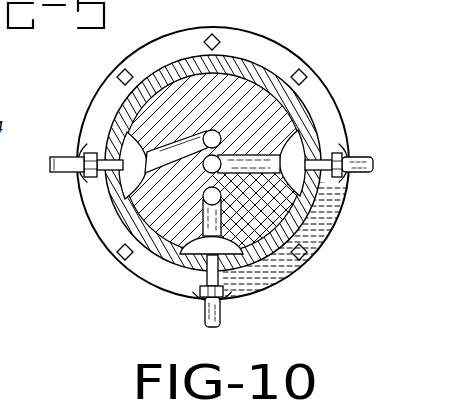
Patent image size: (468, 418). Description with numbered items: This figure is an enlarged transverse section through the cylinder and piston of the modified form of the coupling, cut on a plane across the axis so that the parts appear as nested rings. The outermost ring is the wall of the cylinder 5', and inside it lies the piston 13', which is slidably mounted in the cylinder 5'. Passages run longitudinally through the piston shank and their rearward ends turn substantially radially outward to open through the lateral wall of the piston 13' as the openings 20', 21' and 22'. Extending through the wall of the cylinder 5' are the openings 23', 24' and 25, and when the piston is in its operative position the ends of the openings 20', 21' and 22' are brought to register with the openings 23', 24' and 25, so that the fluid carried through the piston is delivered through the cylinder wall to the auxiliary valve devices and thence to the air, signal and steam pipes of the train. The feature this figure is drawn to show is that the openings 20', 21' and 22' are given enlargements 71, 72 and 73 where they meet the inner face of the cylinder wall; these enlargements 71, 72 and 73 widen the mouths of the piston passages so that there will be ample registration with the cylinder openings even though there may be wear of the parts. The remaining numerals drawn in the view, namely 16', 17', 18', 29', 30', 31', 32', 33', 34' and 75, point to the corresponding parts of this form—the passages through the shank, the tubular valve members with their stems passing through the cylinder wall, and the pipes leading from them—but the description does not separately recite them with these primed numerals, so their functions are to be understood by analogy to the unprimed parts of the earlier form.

The cylinder 5' is at (213, 139).
The piston 13' is at (256, 157).
The valve pivot 16' is at (184, 78).
The passage sector 17' is at (238, 178).
The casing wall 18' is at (213, 177).
The opening 20' is at (297, 236).
The opening 21' is at (135, 120).
The opening 22' is at (208, 180).
The opening 23' is at (351, 189).
The opening 24' is at (71, 192).
The passage 25 is at (207, 321).
The right nut 29' is at (360, 156).
The left adjusting rod 30' is at (73, 156).
The bottom boss 31' is at (235, 303).
The right adjusting rod 32' is at (354, 186).
The left rod neck 33' is at (84, 187).
The bottom adjusting rod 34' is at (232, 295).
The enlargement 71 is at (296, 147).
The enlargement 72 is at (125, 150).
The enlargement 73 is at (203, 247).
The lever 75 is at (9, 204).